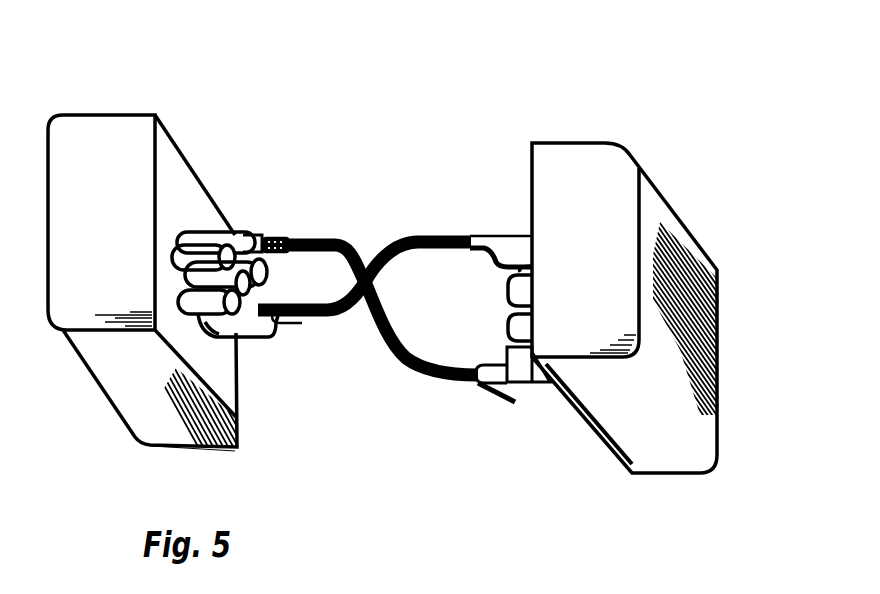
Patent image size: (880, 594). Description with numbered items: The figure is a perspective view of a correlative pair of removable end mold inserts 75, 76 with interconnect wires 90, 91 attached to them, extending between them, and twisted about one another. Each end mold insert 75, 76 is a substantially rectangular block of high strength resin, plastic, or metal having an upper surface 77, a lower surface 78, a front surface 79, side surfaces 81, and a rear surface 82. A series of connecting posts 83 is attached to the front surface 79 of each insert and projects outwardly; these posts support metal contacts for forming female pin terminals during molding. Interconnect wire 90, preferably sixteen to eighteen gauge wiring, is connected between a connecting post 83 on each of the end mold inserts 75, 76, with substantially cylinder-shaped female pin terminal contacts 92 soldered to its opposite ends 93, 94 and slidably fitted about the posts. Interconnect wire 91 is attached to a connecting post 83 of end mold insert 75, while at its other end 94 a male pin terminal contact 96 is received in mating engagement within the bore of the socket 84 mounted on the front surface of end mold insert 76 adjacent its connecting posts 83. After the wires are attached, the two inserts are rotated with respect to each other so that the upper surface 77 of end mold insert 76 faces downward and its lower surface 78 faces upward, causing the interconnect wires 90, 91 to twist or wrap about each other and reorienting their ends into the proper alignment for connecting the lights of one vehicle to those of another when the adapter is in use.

The end mold insert 75 is at (103, 110).
The end mold insert 76 is at (592, 452).
The upper surface 77 is at (108, 233).
The lower surface 78 is at (160, 446).
The front surface 79 is at (168, 154).
The side surface 81 is at (100, 361).
The rear surface 82 is at (657, 230).
The connecting post 83 is at (202, 252).
The socket 84 is at (537, 398).
The interconnect wire 90 is at (334, 324).
The interconnect wire 91 is at (334, 236).
The female pin terminal contact 92 is at (233, 236).
The end of interconnect wire 93 is at (267, 238).
The end of interconnect wire 94 is at (462, 235).
The male pin terminal contact 96 is at (500, 387).